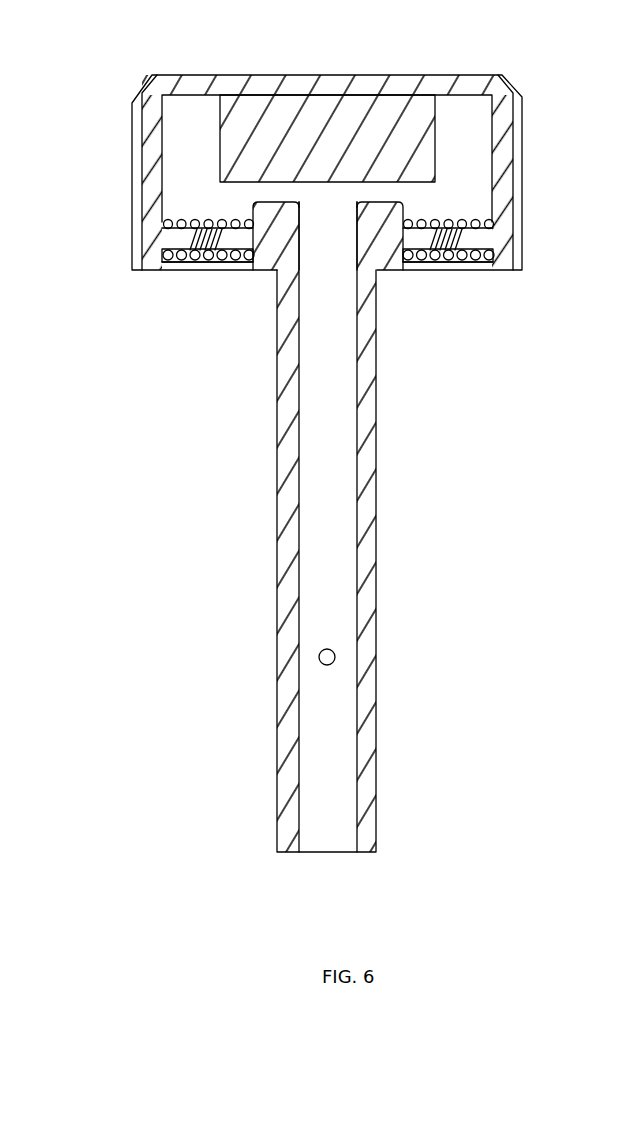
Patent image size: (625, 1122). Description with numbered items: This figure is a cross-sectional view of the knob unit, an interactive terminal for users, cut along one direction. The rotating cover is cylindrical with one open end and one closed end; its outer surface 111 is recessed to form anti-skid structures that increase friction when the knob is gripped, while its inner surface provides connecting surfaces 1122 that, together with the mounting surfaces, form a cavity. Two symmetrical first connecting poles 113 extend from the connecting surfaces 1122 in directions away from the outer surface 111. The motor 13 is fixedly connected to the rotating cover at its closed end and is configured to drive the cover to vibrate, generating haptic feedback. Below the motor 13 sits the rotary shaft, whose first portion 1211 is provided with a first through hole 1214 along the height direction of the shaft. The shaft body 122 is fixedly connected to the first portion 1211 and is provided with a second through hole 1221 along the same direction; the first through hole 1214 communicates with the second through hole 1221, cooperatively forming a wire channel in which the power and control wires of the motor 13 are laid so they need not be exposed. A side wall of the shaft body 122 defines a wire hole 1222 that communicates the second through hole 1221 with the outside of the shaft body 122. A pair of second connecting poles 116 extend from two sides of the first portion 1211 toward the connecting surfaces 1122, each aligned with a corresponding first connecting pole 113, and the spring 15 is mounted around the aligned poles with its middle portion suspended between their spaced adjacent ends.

The outer surface 111 is at (140, 173).
The connecting surface 1122 is at (150, 125).
The motor 13 is at (327, 135).
The first connecting pole 113 is at (185, 234).
The spring 15 is at (182, 262).
The second connecting pole 116 is at (237, 243).
The shaft body 122 is at (390, 527).
The first portion 1211 is at (373, 243).
The first through hole 1214 is at (325, 237).
The second through hole 1221 is at (322, 447).
The wire hole 1222 is at (333, 658).